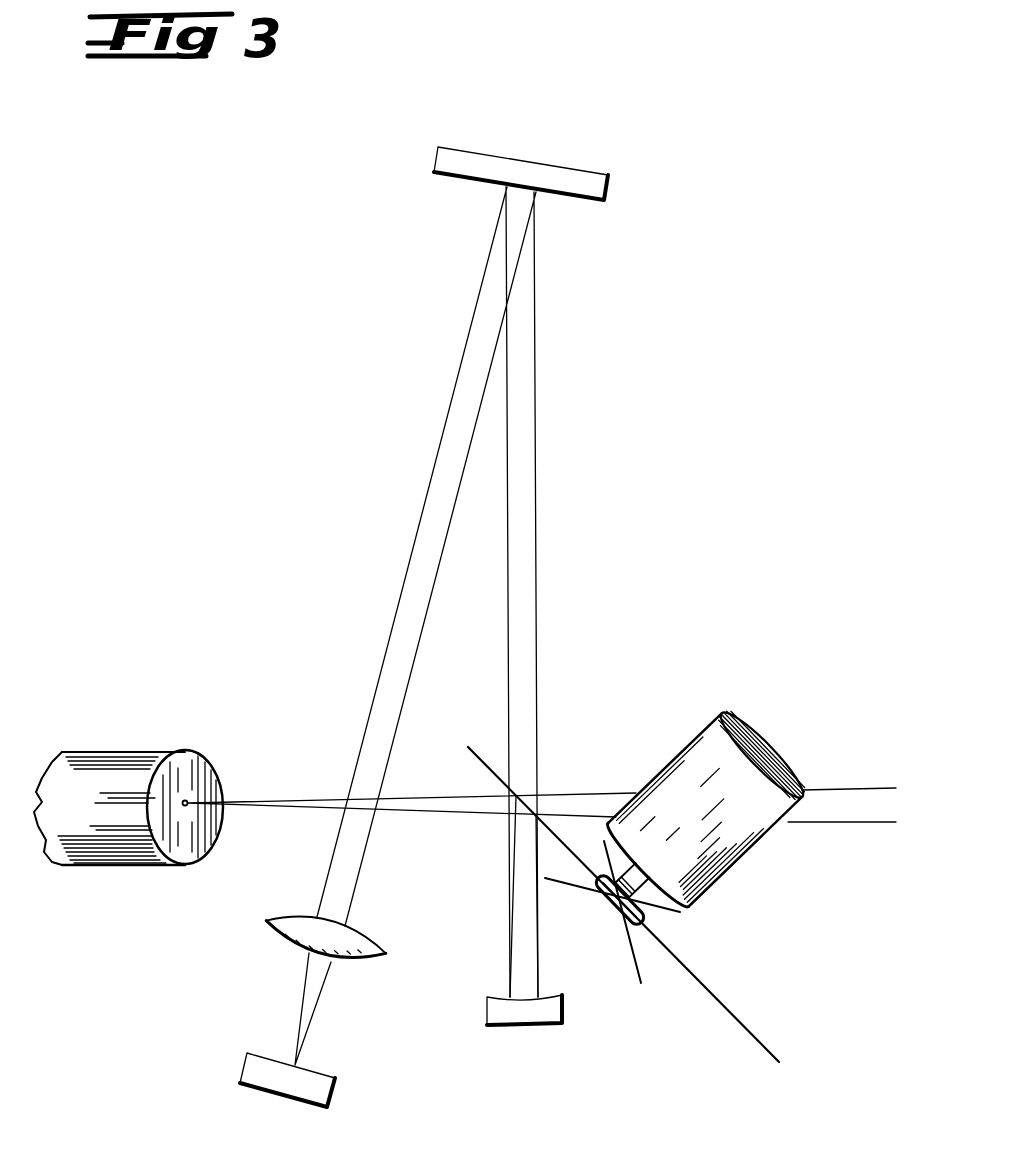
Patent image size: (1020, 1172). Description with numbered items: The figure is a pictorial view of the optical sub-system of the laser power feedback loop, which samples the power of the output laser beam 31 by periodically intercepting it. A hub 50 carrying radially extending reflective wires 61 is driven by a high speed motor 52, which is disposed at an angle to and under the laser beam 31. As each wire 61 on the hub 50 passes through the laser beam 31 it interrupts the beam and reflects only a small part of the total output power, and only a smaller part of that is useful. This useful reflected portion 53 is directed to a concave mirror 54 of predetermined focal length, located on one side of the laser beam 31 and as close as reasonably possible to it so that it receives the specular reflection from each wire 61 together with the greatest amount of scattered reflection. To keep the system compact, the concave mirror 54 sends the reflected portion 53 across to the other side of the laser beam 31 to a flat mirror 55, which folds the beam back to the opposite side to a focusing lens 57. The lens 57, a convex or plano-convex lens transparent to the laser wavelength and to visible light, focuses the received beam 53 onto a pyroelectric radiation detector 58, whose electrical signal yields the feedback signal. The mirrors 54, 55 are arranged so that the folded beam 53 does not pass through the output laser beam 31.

The laser beam 31 is at (440, 812).
The hub 50 is at (616, 912).
The high speed motor 52 is at (742, 716).
The useful reflected portion of the beam 53 is at (528, 968).
The concave mirror 54 is at (563, 1010).
The flat mirror 55 is at (610, 186).
The focusing lens 57 is at (387, 955).
The pyroelectric radiation detector 58 is at (337, 1082).
The reflective wire 61 is at (482, 762).